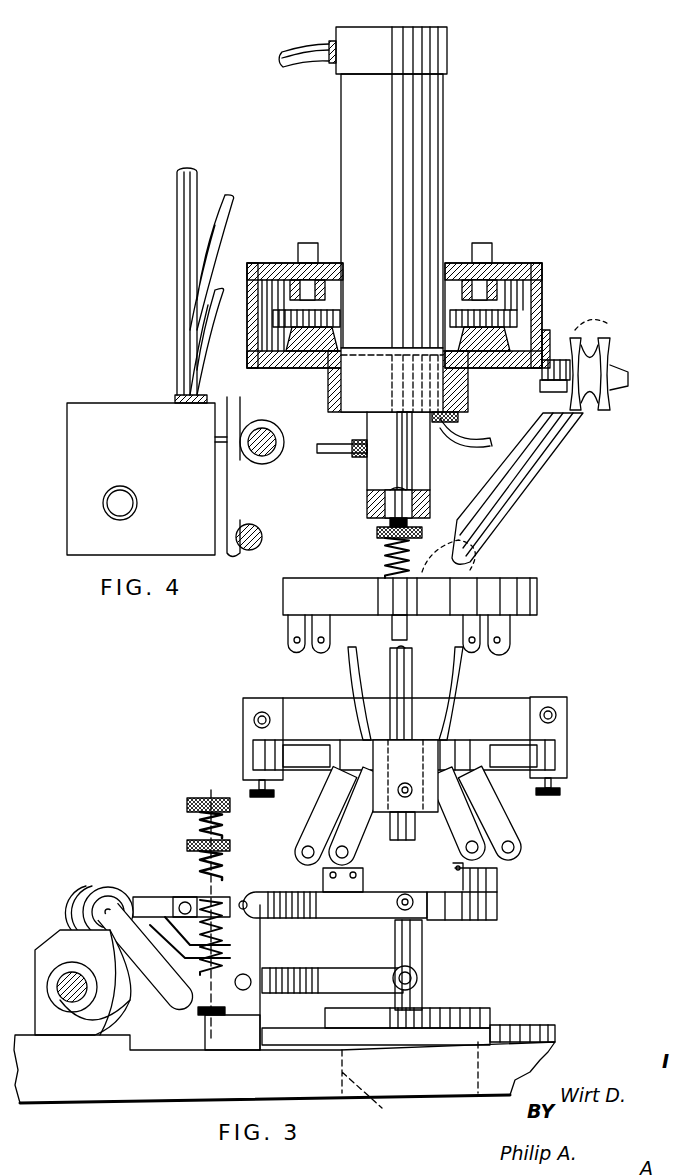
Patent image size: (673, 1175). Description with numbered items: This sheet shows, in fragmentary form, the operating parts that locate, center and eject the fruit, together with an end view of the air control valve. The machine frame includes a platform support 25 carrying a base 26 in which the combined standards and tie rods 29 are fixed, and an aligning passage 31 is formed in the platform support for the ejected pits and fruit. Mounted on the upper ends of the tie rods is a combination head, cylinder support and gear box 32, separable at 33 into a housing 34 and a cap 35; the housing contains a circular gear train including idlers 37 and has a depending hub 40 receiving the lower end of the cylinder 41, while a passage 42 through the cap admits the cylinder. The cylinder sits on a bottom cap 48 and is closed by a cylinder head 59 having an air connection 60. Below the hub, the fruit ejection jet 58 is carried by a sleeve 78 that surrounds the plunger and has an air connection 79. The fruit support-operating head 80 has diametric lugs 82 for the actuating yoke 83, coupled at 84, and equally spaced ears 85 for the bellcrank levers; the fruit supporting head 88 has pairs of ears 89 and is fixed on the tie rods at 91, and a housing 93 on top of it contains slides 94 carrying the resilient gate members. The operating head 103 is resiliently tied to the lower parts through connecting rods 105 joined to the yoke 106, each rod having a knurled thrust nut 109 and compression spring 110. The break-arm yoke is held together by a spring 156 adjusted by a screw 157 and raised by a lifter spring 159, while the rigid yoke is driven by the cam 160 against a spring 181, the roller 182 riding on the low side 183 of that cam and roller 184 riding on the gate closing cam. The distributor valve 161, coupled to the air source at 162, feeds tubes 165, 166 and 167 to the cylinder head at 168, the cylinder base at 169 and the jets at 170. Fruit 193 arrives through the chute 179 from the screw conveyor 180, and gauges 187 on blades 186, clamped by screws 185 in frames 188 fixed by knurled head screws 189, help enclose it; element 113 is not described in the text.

In FIG. 3, the platform support 25 is at (135, 1090).
In FIG. 3, the base 26 is at (505, 1025).
In FIG. 3, the combined standards and tie rods 29 is at (415, 985).
In FIG. 3, the aligning passage 31 is at (410, 1085).
In FIG. 3, the combination head, cylinder support and gear box 32 is at (538, 265).
In FIG. 3, the separation line 33 is at (545, 315).
In FIG. 3, the housing 34 is at (247, 350).
In FIG. 3, the cap 35 is at (262, 263).
In FIG. 3, the idlers 37 is at (300, 330).
In FIG. 3, the depending hub 40 is at (328, 405).
In FIG. 3, the cylinder 41 is at (443, 200).
In FIG. 3, the passage 42 is at (343, 272).
In FIG. 3, the bottom cap 48 is at (458, 405).
In FIG. 3, the fruit ejection jet 58 is at (367, 497).
In FIG. 3, the cylinder head 59 is at (447, 50).
In FIG. 3, the air connection 60 is at (330, 60).
In FIG. 3, the sleeve 78 is at (412, 500).
In FIG. 3, the air connection 79 is at (335, 453).
In FIG. 3, the fruit support-operating head 80 is at (490, 912).
In FIG. 3, the diametric lugs 82 is at (413, 905).
In FIG. 3, the actuating yoke 83 is at (300, 905).
In FIG. 3, the coupling / yoke 84 is at (410, 900).
In FIG. 3, the ears 85 is at (497, 880).
In FIG. 3, the fruit supporting head 88 is at (472, 788).
In FIG. 3, the pairs of ears 89 is at (520, 830).
In FIG. 3, the securing point 91 is at (405, 797).
In FIG. 3, the housing 93 is at (555, 752).
In FIG. 3, the slides 94 is at (290, 760).
In FIG. 3, the operating head 103 is at (537, 595).
In FIG. 3, the connecting rods 105 is at (422, 945).
In FIG. 3, the yoke 106 is at (330, 978).
In FIG. 3, the knurled thrust nut 109 is at (377, 535).
In FIG. 3, the compression spring 110 is at (385, 558).
In FIG. 3, the lug 113 is at (290, 640).
In FIG. 3, the spring 156 is at (200, 825).
In FIG. 3, the screw 157 is at (205, 798).
In FIG. 3, the lifter spring 159 is at (200, 868).
In FIG. 3, the cam 160 is at (45, 945).
In FIG. 4, the distributor valve 161 is at (101, 395).
In FIG. 4, the air source connection 162 is at (118, 510).
In FIG. 3, the tube 165 is at (282, 58).
In FIG. 4, the tube 165 is at (197, 320).
In FIG. 4, the tube 166 is at (197, 250).
In FIG. 4, the tube 167 is at (177, 208).
In FIG. 3, the cylinder head connection 168 is at (333, 66).
In FIG. 3, the cylinder base connection 169 is at (470, 440).
In FIG. 3, the jet connection 170 is at (345, 444).
In FIG. 3, the chute 179 is at (540, 480).
In FIG. 3, the screw conveyor 180 is at (620, 392).
In FIG. 3, the spring 181 is at (175, 935).
In FIG. 3, the roller 182 is at (108, 887).
In FIG. 3, the low side 183 is at (150, 1005).
In FIG. 3, the roller 184 is at (80, 888).
In FIG. 3, the clamp screw 185 is at (254, 720).
In FIG. 3, the blade 186 is at (295, 705).
In FIG. 3, the gauge 187 is at (350, 680).
In FIG. 3, the frame 188 is at (567, 728).
In FIG. 3, the knurled head screws 189 is at (560, 790).
In FIG. 3, the fruit 193 is at (606, 326).